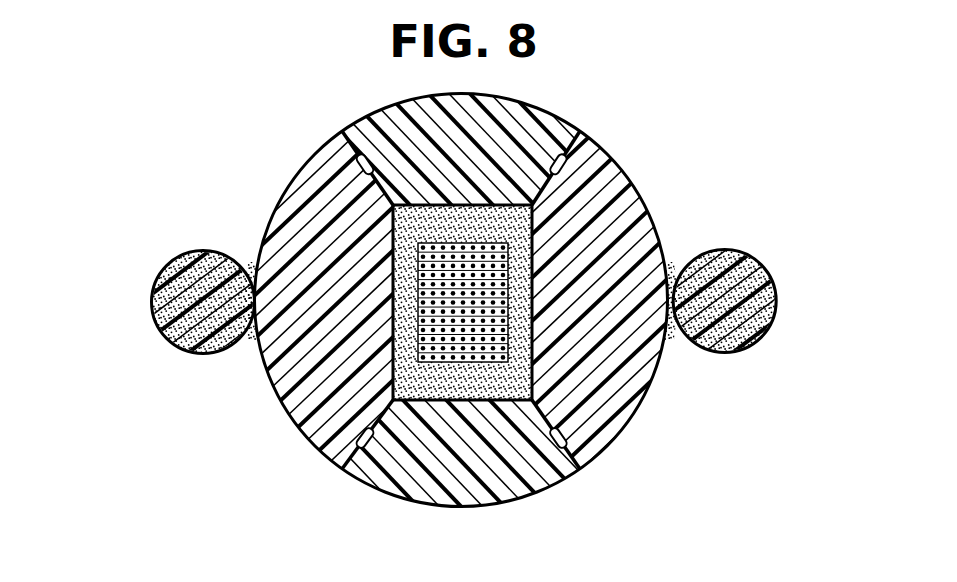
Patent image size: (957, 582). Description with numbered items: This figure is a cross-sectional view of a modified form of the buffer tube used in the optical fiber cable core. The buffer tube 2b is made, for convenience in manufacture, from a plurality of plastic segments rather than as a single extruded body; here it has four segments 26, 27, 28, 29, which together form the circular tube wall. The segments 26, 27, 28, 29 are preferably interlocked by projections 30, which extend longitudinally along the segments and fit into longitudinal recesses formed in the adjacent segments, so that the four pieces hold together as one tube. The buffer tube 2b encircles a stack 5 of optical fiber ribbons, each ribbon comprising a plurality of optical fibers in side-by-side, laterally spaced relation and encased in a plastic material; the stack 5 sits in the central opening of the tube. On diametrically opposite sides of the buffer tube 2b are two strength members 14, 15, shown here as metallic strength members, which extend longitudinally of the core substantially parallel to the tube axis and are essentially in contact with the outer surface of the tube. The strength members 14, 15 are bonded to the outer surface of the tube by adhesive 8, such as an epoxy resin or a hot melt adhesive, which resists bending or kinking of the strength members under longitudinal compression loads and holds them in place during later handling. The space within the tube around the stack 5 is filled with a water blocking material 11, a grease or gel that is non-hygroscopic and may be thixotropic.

The buffer tube 2b is at (658, 219).
The stack of optical fiber ribbons 5 is at (461, 254).
The adhesive 8 is at (251, 272).
The water blocking material 11 is at (456, 205).
The metallic strength member 14 is at (168, 340).
The metallic strength member 15 is at (750, 263).
The plastic segment 26 is at (622, 421).
The plastic segment 27 is at (466, 498).
The plastic segment 28 is at (292, 402).
The plastic segment 29 is at (560, 138).
The projection 30 is at (357, 166).